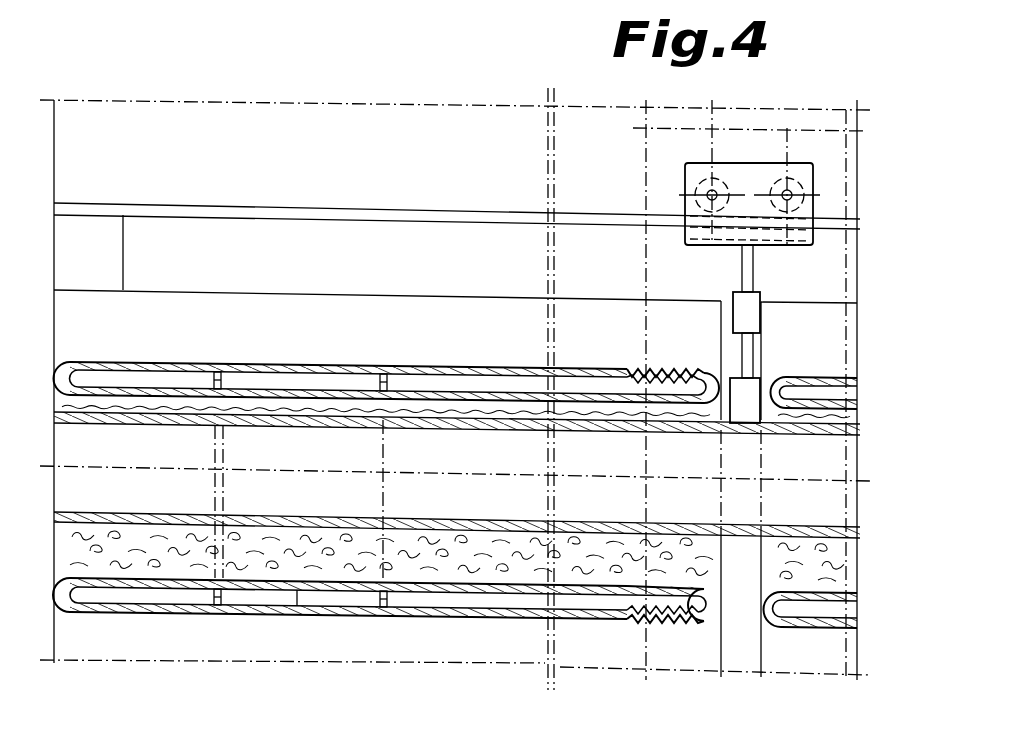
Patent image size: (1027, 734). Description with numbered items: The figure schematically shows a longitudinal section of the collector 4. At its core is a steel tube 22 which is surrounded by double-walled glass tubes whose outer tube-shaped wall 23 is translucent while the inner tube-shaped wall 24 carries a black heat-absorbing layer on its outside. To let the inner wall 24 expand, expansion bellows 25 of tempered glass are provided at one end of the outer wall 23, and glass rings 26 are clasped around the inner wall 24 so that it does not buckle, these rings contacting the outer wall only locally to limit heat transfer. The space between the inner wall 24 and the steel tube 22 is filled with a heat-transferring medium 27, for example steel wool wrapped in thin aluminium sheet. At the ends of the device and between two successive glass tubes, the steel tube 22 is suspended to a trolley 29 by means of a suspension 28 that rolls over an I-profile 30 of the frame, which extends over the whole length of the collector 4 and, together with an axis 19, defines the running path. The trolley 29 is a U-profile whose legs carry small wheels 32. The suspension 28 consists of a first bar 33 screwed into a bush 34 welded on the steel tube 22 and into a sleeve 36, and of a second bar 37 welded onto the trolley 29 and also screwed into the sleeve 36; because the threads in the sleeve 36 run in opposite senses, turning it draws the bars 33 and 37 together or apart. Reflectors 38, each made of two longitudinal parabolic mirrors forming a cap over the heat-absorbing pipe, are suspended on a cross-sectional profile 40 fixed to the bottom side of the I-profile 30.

The collector 4 is at (211, 116).
The guide rail axis 19 is at (746, 128).
The steel tube 22 is at (387, 361).
The outer tube-shaped wall 23 is at (305, 368).
The inner tube-shaped wall 24 is at (379, 622).
The expansion bellows 25 is at (648, 372).
The glass rings 26 is at (228, 378).
The heat-transferring medium 27 is at (447, 608).
The suspension 28 is at (741, 360).
The trolley 29 is at (769, 161).
The I-profile 30 is at (405, 118).
The wheels 32 is at (706, 165).
The first bar 33 is at (755, 356).
The bush 34 is at (748, 432).
The sleeve 36 is at (745, 325).
The second bar 37 is at (755, 270).
The reflectors 38 is at (183, 652).
The cross-sectional profile 40 is at (94, 228).